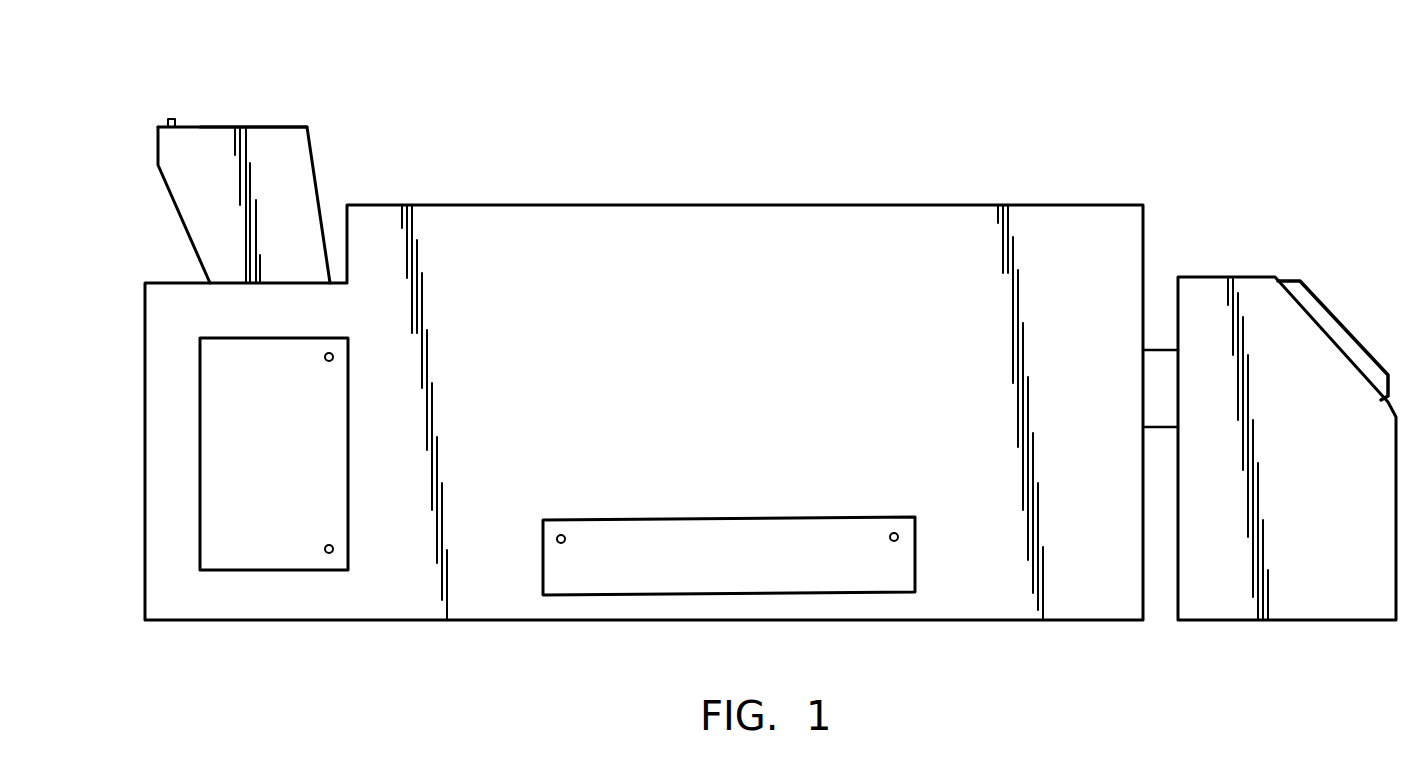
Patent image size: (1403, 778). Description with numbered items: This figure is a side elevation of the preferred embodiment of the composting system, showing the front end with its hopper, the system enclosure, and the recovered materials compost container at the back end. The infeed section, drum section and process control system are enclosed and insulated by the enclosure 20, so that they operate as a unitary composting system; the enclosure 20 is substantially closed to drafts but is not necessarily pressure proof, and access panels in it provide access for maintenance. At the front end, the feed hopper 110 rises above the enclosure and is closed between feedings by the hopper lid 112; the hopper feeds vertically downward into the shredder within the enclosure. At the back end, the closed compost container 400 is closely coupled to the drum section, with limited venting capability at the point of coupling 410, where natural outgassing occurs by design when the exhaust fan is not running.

The enclosure 20 is at (648, 205).
The feed hopper 110 is at (314, 155).
The hopper lid 112 is at (268, 112).
The closed compost container 400 is at (1287, 621).
The coupling 410 is at (1158, 349).